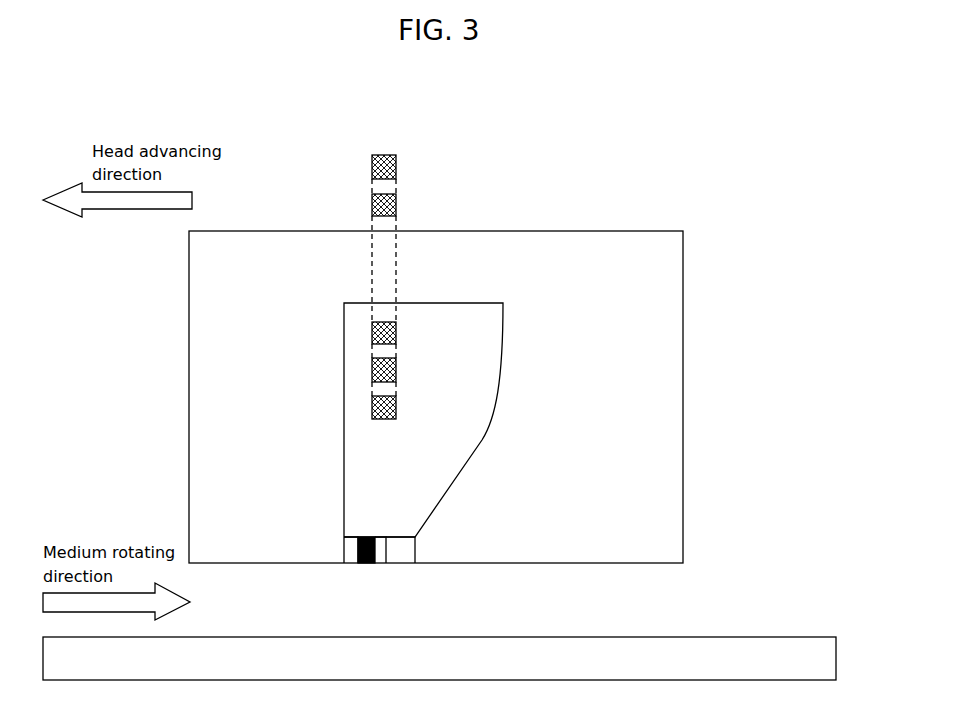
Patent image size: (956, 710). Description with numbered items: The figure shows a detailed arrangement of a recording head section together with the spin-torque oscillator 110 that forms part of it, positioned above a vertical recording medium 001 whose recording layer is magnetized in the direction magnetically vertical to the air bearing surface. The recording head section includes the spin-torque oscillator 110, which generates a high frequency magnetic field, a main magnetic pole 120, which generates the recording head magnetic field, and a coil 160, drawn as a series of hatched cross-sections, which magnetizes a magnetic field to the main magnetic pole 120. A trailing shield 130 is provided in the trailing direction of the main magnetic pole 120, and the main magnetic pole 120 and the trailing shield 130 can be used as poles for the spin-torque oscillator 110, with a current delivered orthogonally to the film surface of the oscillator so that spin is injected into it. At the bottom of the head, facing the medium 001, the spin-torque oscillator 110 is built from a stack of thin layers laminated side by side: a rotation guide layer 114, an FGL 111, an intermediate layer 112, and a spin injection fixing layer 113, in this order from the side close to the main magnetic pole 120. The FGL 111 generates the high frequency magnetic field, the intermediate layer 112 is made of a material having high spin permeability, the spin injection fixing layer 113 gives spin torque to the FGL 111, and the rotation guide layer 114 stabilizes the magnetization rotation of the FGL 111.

The vertical recording medium 001 is at (722, 637).
The spin-torque oscillator 110 is at (383, 586).
The FGL 111 is at (367, 555).
The intermediate layer 112 is at (378, 555).
The spin injection fixing layer 113 is at (421, 569).
The rotation guide layer 114 is at (350, 555).
The main magnetic pole 120 is at (332, 553).
The trailing shield 130 is at (430, 552).
The coil 160 is at (411, 169).